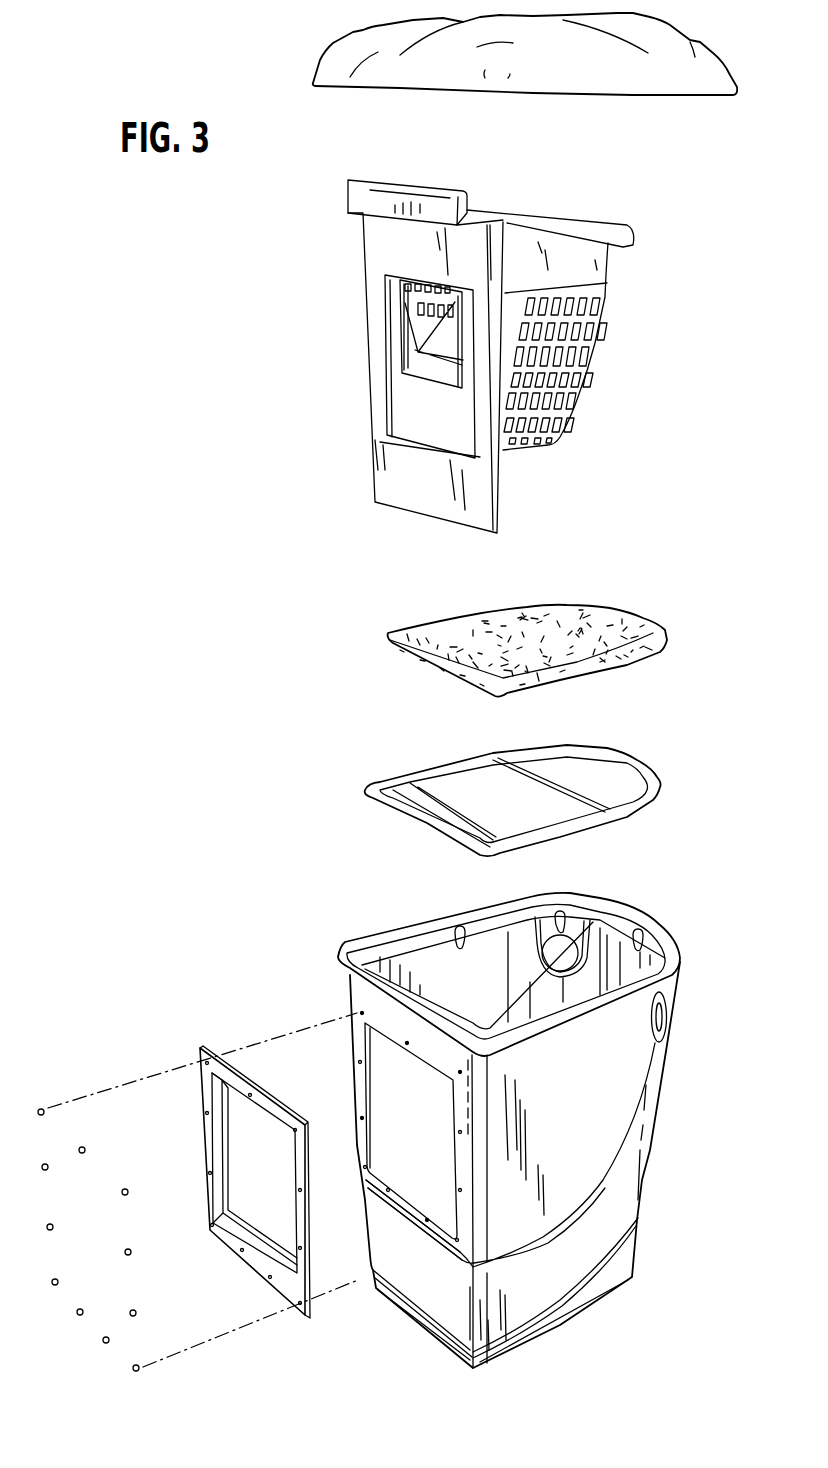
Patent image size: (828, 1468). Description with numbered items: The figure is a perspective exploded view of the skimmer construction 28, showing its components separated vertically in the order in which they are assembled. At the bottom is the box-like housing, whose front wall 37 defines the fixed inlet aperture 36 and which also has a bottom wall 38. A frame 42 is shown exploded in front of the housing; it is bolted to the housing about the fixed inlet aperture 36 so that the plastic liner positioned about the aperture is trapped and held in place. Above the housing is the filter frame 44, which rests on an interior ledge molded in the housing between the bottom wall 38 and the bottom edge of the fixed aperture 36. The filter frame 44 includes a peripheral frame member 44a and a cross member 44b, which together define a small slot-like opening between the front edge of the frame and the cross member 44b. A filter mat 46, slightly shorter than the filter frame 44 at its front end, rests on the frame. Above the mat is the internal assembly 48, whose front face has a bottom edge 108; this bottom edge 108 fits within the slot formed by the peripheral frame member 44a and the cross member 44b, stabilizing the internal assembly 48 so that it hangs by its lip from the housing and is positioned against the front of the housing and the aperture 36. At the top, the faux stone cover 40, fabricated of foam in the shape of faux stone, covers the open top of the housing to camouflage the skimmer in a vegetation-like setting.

The skimmer construction 28 is at (512, 1130).
The fixed inlet aperture 36 is at (357, 1107).
The front wall 37 is at (417, 1283).
The bottom wall 38 is at (593, 1313).
The faux stone cover 40 is at (372, 85).
The frame 42 is at (213, 1052).
The filter frame 44 is at (515, 789).
The peripheral frame member 44a is at (442, 768).
The cross member 44b is at (432, 802).
The filter mat 46 is at (640, 618).
The internal assembly 48 is at (343, 344).
The bottom edge 108 is at (450, 512).